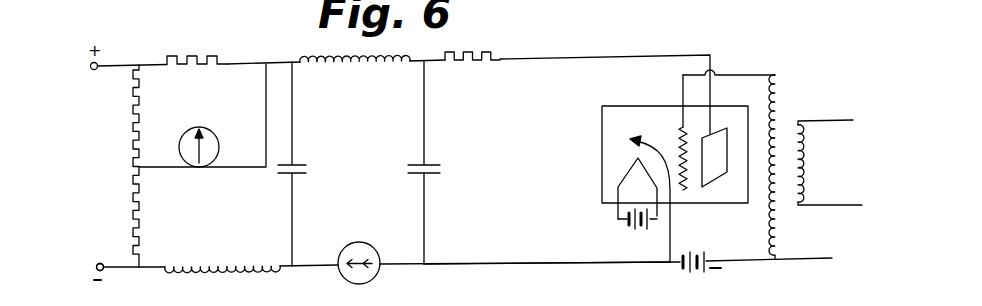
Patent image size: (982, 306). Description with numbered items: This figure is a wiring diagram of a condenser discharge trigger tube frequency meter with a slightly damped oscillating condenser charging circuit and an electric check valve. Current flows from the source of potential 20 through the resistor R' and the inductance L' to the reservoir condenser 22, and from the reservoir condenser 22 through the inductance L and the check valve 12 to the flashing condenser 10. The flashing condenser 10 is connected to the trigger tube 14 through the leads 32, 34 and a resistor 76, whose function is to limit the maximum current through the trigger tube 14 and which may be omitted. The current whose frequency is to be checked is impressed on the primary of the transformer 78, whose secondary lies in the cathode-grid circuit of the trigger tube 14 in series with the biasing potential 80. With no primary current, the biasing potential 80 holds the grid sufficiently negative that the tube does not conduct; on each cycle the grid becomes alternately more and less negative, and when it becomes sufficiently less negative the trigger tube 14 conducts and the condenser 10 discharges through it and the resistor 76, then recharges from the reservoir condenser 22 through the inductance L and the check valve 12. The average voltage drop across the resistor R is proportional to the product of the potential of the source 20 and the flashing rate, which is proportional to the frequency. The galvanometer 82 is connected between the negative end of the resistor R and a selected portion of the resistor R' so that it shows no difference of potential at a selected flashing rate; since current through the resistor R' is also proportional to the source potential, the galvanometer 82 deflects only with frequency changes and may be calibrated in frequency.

The source of potential 20 is at (113, 284).
The resistor R is at (197, 49).
The resistor R' is at (151, 166).
The galvanometer 82 is at (228, 114).
The inductance L is at (355, 80).
The inductance L' is at (222, 256).
The reservoir condenser 22 is at (299, 172).
The flashing condenser 10 is at (428, 171).
The electric check valve 12 is at (365, 246).
The resistor 76 is at (472, 43).
The lead 34 is at (587, 57).
The trigger tube 14 is at (602, 148).
The biasing potential 80 is at (707, 236).
The lead 32 is at (572, 251).
The transformer 78 is at (780, 108).